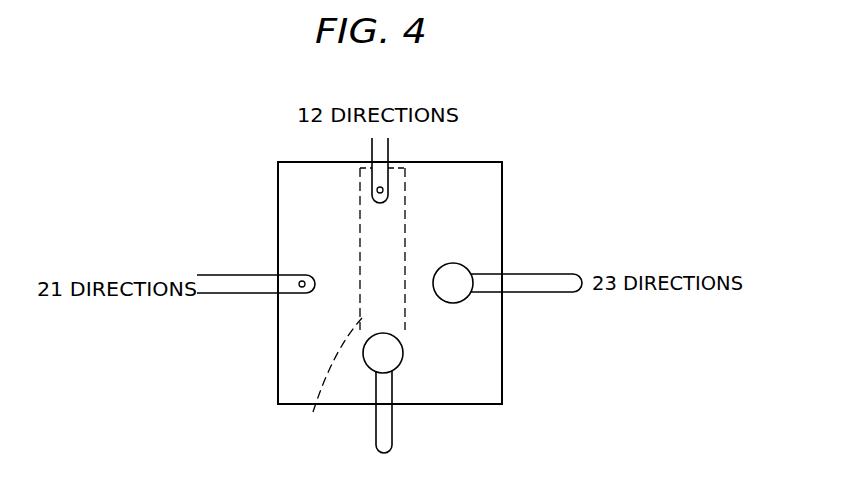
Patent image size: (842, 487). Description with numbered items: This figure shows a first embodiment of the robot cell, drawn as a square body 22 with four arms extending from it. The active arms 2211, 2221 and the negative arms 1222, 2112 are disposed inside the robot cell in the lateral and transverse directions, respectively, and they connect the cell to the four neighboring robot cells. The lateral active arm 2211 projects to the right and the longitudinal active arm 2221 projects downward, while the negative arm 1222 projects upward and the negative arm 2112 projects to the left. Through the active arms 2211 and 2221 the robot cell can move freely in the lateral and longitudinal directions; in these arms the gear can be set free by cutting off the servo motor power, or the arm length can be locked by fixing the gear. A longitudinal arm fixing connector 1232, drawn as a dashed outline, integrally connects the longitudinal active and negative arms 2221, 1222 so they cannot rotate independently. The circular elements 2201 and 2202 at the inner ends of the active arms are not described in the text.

The housing block 22 is at (503, 173).
The negative arm 1222 is at (388, 146).
The active arm 2211 is at (518, 273).
The pivot ball of side shaft 2201 is at (470, 299).
The pivot ball of lower shaft 2202 is at (403, 352).
The active arm 2221 is at (393, 413).
The longitudinal arm fixing connector 1232 is at (345, 303).
The negative arm 2112 is at (232, 296).